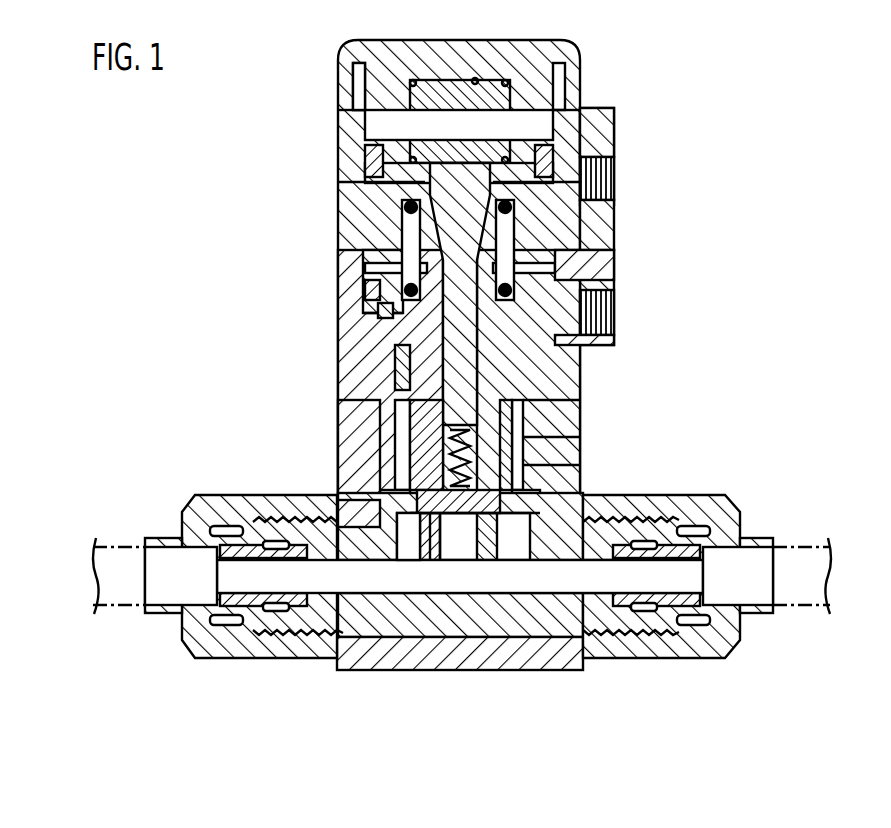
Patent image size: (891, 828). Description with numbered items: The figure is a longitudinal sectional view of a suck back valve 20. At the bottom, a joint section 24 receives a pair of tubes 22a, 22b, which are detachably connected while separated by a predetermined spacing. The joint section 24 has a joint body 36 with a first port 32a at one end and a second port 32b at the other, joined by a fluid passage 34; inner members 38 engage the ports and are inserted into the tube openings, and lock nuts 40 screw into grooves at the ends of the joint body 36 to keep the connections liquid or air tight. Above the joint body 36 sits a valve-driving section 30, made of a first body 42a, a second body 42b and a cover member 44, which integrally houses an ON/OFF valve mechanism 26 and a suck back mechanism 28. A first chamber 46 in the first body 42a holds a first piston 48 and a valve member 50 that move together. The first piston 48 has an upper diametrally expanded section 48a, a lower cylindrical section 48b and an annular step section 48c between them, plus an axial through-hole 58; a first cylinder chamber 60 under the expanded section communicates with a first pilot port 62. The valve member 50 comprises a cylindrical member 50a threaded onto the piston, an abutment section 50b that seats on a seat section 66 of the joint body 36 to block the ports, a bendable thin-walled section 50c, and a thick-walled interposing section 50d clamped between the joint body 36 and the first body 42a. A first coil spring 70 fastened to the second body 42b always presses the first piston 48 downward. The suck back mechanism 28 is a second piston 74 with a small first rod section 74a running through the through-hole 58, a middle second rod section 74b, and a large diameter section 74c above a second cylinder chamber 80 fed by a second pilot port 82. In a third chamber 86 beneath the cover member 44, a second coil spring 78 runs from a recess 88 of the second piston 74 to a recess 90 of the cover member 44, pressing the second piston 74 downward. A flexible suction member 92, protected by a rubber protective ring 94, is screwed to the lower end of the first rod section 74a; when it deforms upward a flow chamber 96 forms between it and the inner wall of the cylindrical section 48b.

The suck back valve 20 is at (722, 48).
The tube 22a is at (118, 605).
The tube 22b is at (828, 605).
The joint section 24 is at (280, 659).
The ON/OFF valve mechanism 26 is at (583, 463).
The suck back mechanism 28 is at (385, 440).
The valve-driving section 30 is at (582, 400).
The first port 32a is at (340, 630).
The second port 32b is at (580, 590).
The fluid passage 34 is at (478, 585).
The joint body 36 is at (357, 637).
The inner member 38 is at (688, 600).
The lock nut 40 is at (728, 646).
The first body 42a is at (616, 258).
The second body 42b is at (600, 106).
The cover member 44 is at (568, 44).
The first chamber 46 is at (397, 467).
The first piston 48 is at (595, 372).
The diametrally expanded section 48a is at (612, 277).
The cylindrical section 48b is at (395, 420).
The annular step section 48c is at (612, 345).
The valve member 50 is at (583, 437).
The cylindrical member 50a is at (520, 425).
The abutment section 50b is at (420, 500).
The thin-walled section 50c is at (372, 520).
The thick-walled interposing section 50d is at (337, 487).
The through-hole 58 is at (455, 370).
The first cylinder chamber 60 is at (376, 318).
The first pilot port 62 is at (614, 304).
The seat section 66 is at (422, 512).
The first coil spring 70 is at (600, 213).
The second piston 74 is at (400, 232).
The first rod section 74a is at (392, 395).
The second rod section 74b is at (370, 283).
The large diameter section 74c is at (372, 155).
The second coil spring 78 is at (440, 88).
The second cylinder chamber 80 is at (348, 185).
The second pilot port 82 is at (614, 165).
The third chamber 86 is at (358, 66).
The recess 88 is at (597, 122).
The recess 90 is at (472, 95).
The suction member 92 is at (457, 516).
The protective ring 94 is at (482, 512).
The flow chamber 96 is at (446, 515).